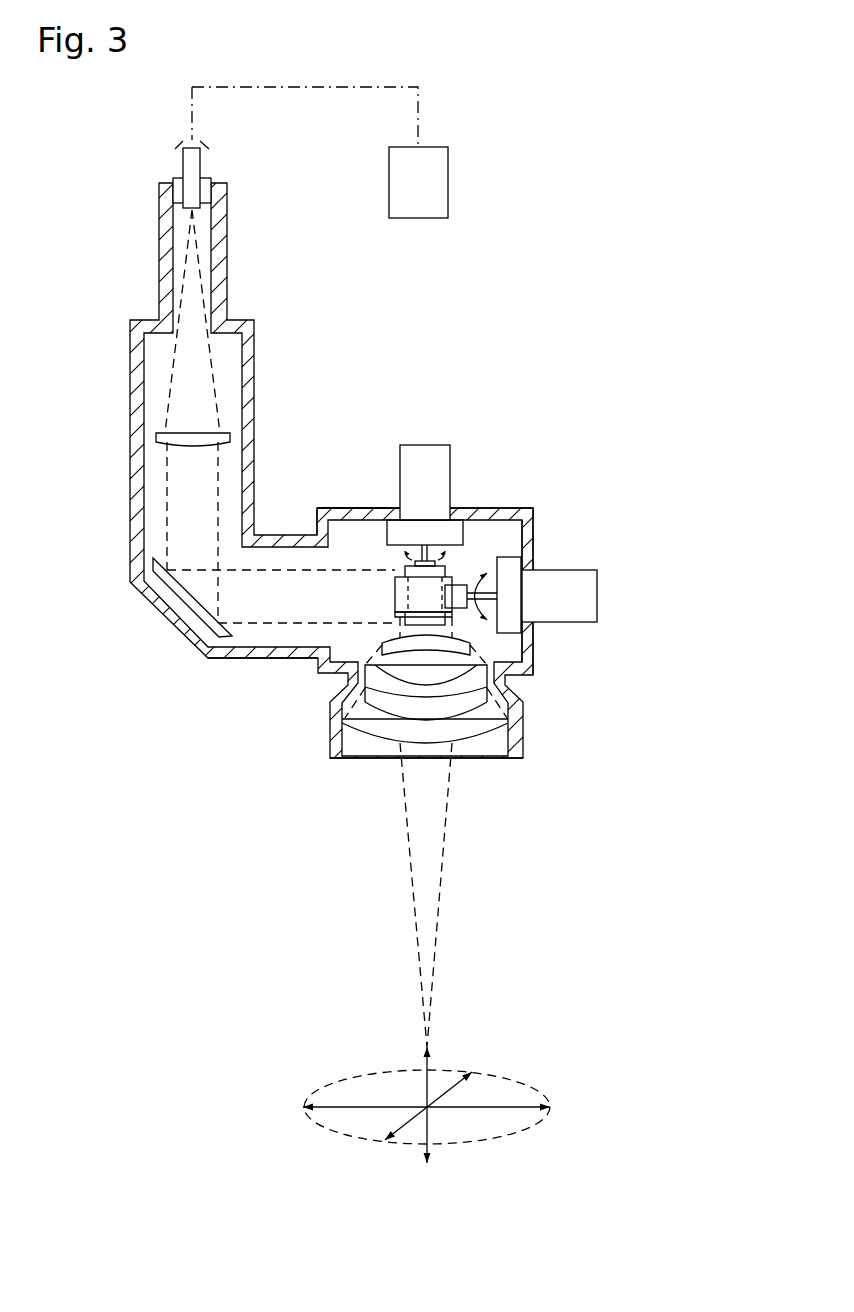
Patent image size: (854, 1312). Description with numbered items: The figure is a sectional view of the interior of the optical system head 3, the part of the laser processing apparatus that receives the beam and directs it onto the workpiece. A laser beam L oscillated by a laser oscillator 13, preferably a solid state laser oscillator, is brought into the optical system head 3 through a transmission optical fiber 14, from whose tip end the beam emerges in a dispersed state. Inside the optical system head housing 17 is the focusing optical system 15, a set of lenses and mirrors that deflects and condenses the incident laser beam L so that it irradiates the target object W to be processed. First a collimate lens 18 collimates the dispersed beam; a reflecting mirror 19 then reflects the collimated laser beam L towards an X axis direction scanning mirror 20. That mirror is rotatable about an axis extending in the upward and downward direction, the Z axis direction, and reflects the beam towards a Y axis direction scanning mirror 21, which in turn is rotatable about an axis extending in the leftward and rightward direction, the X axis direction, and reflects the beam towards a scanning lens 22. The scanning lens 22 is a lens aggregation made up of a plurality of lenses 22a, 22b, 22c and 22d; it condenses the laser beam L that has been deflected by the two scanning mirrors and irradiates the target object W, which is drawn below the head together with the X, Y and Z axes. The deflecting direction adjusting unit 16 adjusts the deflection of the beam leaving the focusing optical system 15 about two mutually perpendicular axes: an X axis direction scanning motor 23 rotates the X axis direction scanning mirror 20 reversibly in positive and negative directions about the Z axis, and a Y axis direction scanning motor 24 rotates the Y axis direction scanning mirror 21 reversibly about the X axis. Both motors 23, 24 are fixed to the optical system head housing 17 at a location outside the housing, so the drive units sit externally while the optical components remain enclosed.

The optical system head 3 is at (203, 685).
The laser oscillator 13 is at (433, 199).
The transmission optical fiber 14 is at (183, 162).
The focusing optical system 15 is at (267, 633).
The deflecting direction adjusting unit 16 is at (577, 487).
The optical system head housing 17 is at (343, 507).
The collimate lens 18 is at (157, 438).
The reflecting mirror 19 is at (175, 597).
The X axis direction scanning mirror 20 is at (440, 568).
The Y axis direction scanning mirror 21 is at (447, 580).
The scanning lens 22 is at (526, 703).
The lens 22a is at (462, 652).
The lens 22b is at (473, 680).
The lens 22c is at (473, 698).
The lens 22d is at (480, 727).
The X axis direction scanning motor 23 is at (422, 445).
The Y axis direction scanning motor 24 is at (597, 596).
The laser beam L is at (168, 500).
The target object to be processed W is at (505, 1085).
The X axis X is at (439, 1108).
The Y axis Y is at (416, 1123).
The Z axis Z is at (427, 1123).